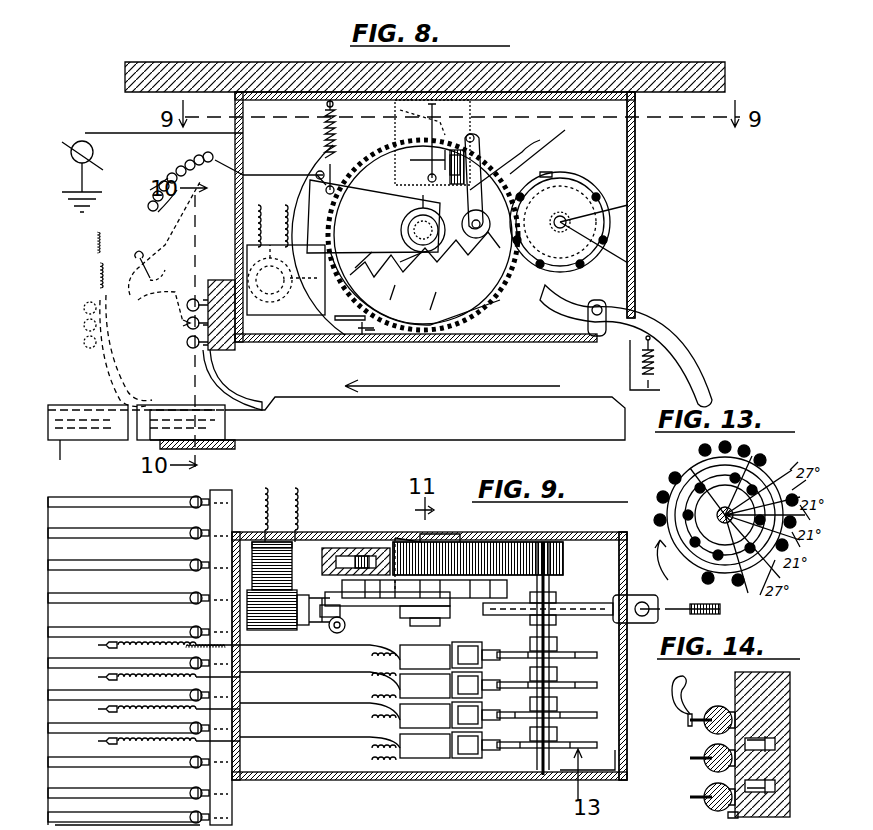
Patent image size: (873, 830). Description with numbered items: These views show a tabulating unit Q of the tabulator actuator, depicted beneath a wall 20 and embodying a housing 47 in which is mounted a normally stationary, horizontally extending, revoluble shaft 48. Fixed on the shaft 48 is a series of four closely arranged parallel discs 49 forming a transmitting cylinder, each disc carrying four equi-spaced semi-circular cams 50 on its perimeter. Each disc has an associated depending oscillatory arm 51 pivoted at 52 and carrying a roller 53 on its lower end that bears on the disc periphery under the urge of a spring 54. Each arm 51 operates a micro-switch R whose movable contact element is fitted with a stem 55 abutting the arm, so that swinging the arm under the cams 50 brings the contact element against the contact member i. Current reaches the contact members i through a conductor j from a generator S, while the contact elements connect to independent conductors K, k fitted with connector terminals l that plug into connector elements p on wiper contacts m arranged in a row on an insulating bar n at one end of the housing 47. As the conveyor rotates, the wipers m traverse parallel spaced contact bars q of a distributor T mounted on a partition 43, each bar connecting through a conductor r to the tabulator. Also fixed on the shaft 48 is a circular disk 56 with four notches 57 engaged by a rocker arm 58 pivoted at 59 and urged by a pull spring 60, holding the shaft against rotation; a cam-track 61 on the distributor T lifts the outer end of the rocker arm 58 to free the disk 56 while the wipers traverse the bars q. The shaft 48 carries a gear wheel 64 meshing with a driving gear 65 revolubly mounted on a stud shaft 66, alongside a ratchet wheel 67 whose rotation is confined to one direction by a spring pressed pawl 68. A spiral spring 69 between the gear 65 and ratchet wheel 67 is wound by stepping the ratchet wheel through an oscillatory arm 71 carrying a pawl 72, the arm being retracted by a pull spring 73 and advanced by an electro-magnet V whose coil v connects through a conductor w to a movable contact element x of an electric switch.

In FIG. 8, the wall 20 is at (125, 76).
In FIG. 8, the tabulating unit Q is at (648, 166).
In FIG. 8, the housing 47 is at (636, 180).
In FIG. 9, the housing 47 is at (540, 552).
In FIG. 8, the conductor j is at (123, 132).
In FIG. 8, the generator S is at (103, 157).
In FIG. 8, the conductor K is at (283, 175).
In FIG. 9, the conductor K is at (140, 640).
In FIG. 14, the conductor K is at (680, 684).
In FIG. 8, the pull spring 73 is at (327, 146).
In FIG. 8, the oscillatory arm 71 is at (300, 203).
In FIG. 9, the oscillatory arm 71 is at (378, 610).
In FIG. 8, the movable contact element x is at (255, 219).
In FIG. 9, the movable contact element x is at (258, 507).
In FIG. 8, the conductor w is at (283, 219).
In FIG. 9, the conductor w is at (303, 503).
In FIG. 8, the contact member i is at (396, 115).
In FIG. 8, the conductor k is at (470, 115).
In FIG. 8, the spring 54 is at (450, 179).
In FIG. 8, the ratchet wheel 67 is at (460, 302).
In FIG. 9, the ratchet wheel 67 is at (464, 592).
In FIG. 8, the driving gear 65 is at (492, 290).
In FIG. 9, the driving gear 65 is at (503, 542).
In FIG. 8, the spring pressed pawl 68 is at (398, 305).
In FIG. 8, the micro-switch R is at (373, 216).
In FIG. 9, the micro-switch R is at (398, 662).
In FIG. 8, the spring pressed pawl 72 is at (402, 230).
In FIG. 8, the stud shaft 66 is at (410, 250).
In FIG. 9, the stud shaft 66 is at (440, 540).
In FIG. 8, the circular disk 56 is at (578, 172).
In FIG. 9, the circular disk 56 is at (574, 602).
In FIG. 8, the cam 50 is at (585, 175).
In FIG. 9, the cam 50 is at (530, 644).
In FIG. 13, the cam 50 is at (700, 452).
In FIG. 8, the notch 57 is at (550, 168).
In FIG. 9, the notch 57 is at (540, 615).
In FIG. 8, the shaft 48 is at (560, 215).
In FIG. 9, the shaft 48 is at (556, 580).
In FIG. 13, the shaft 48 is at (724, 508).
In FIG. 8, the stem 55 is at (537, 149).
In FIG. 8, the arm 51 is at (492, 163).
In FIG. 9, the arm 51 is at (480, 645).
In FIG. 8, the pivot 52 is at (478, 133).
In FIG. 8, the roller 53 is at (468, 236).
In FIG. 9, the roller 53 is at (486, 684).
In FIG. 8, the rocker arm 58 is at (680, 338).
In FIG. 9, the rocker arm 58 is at (640, 598).
In FIG. 8, the pivot 59 is at (597, 309).
In FIG. 8, the pull spring 60 is at (663, 378).
In FIG. 8, the cam-track 61 is at (527, 405).
In FIG. 8, the partition 43 is at (235, 448).
In FIG. 8, the distributor T is at (80, 401).
In FIG. 8, the contact bar q is at (56, 457).
In FIG. 9, the contact bar q is at (104, 500).
In FIG. 8, the conductor r is at (87, 373).
In FIG. 9, the conductor r is at (87, 357).
In FIG. 8, the insulating bar n is at (219, 302).
In FIG. 9, the insulating bar n is at (220, 490).
In FIG. 14, the insulating bar n is at (735, 678).
In FIG. 8, the wiper contact m is at (213, 367).
In FIG. 14, the wiper contact m is at (728, 815).
In FIG. 8, the connector element p is at (186, 304).
In FIG. 9, the connector element p is at (184, 508).
In FIG. 14, the connector element p is at (712, 712).
In FIG. 8, the connector terminal l is at (150, 268).
In FIG. 9, the connector terminal l is at (96, 648).
In FIG. 14, the connector terminal l is at (704, 728).
In FIG. 8, the electro-magnet V is at (305, 318).
In FIG. 9, the electro-magnet V is at (255, 614).
In FIG. 8, the coil v is at (284, 273).
In FIG. 9, the coil v is at (252, 578).
In FIG. 9, the spiral spring 69 is at (373, 548).
In FIG. 9, the gear wheel 64 is at (563, 562).
In FIG. 9, the disc 49 is at (565, 653).
In FIG. 13, the disc 49 is at (690, 490).